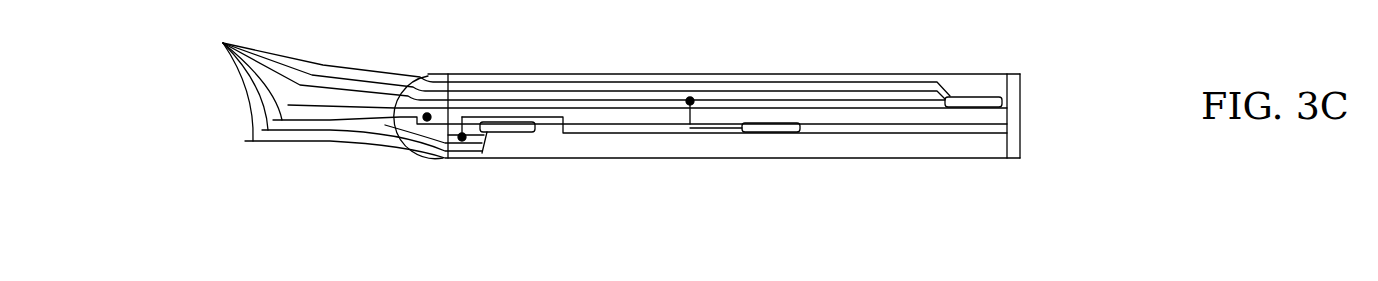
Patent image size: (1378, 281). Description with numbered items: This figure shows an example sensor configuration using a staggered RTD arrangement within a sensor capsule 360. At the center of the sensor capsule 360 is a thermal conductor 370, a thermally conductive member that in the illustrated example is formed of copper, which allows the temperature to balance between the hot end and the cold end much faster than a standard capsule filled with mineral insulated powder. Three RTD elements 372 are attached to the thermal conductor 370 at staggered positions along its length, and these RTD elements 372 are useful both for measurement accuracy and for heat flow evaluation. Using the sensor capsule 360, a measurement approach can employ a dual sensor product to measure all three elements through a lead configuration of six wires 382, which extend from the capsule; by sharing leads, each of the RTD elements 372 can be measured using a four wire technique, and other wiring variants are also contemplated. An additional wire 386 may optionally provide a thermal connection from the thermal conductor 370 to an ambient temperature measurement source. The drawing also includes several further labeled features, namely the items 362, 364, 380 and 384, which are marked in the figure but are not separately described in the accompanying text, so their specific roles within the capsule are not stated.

The sensor capsule 360 is at (789, 64).
The solder joint 362 is at (444, 162).
The stiffener 364 is at (1017, 108).
The thermal conductor 370 is at (907, 113).
The RTD elements 372 is at (504, 140).
The bend region 380 is at (433, 80).
The wires 382 is at (569, 88).
The via connection 384 is at (676, 115).
The additional wire 386 is at (308, 105).